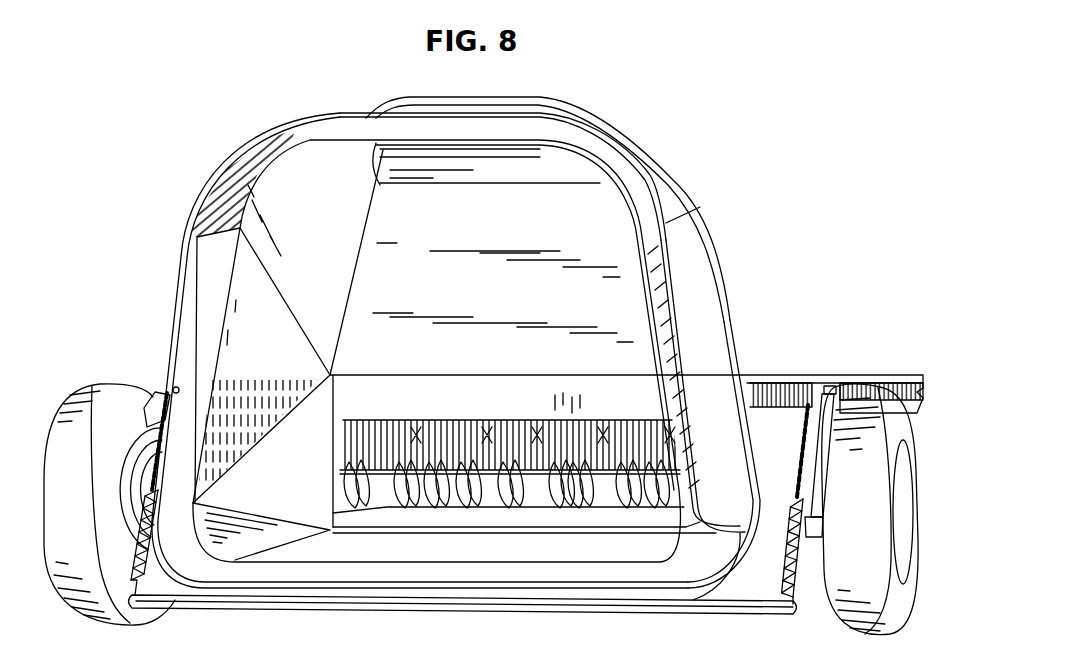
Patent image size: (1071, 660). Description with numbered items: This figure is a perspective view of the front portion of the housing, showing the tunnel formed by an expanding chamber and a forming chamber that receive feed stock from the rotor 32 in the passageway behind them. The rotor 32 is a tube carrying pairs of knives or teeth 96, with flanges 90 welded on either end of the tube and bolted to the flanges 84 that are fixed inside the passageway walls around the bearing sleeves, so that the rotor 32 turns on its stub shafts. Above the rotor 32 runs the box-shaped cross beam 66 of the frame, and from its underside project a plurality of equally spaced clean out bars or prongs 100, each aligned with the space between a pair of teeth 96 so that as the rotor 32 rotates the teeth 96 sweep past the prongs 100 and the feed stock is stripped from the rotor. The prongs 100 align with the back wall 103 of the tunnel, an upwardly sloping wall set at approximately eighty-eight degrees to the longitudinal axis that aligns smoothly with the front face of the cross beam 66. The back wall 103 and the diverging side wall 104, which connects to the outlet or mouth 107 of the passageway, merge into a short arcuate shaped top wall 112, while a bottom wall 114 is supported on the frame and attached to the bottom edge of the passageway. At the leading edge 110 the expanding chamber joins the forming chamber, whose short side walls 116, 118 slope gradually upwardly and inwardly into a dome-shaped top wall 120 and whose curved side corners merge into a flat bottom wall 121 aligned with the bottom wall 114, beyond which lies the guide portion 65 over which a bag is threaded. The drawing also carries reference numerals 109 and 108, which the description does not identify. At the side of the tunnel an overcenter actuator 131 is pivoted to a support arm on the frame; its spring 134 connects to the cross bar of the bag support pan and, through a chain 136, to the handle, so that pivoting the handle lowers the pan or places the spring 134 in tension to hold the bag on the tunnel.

The dome-shaped top wall 120 is at (578, 113).
The guide portion 65 is at (603, 160).
The side wall 118 is at (710, 290).
The side wall 116 is at (200, 302).
The bottom wall 114 is at (457, 553).
The arcuate shaped top wall 112 is at (500, 170).
The back wall 103 is at (513, 290).
The leading edge 110 is at (250, 262).
The edge 109 is at (287, 298).
The side wall 104 is at (277, 366).
The deflector 108 is at (243, 458).
The outlet or mouth 107 is at (337, 455).
The cross beam 66 is at (527, 380).
The clean out bars or prongs 100 is at (393, 417).
The flange 84 is at (333, 480).
The flange 90 is at (363, 483).
The knives or teeth 96 is at (570, 487).
The rotor 32 is at (543, 493).
The flat bottom wall 121 is at (380, 577).
The overcenter actuator 131 is at (832, 400).
The chain 136 is at (803, 422).
The spring 134 is at (790, 568).